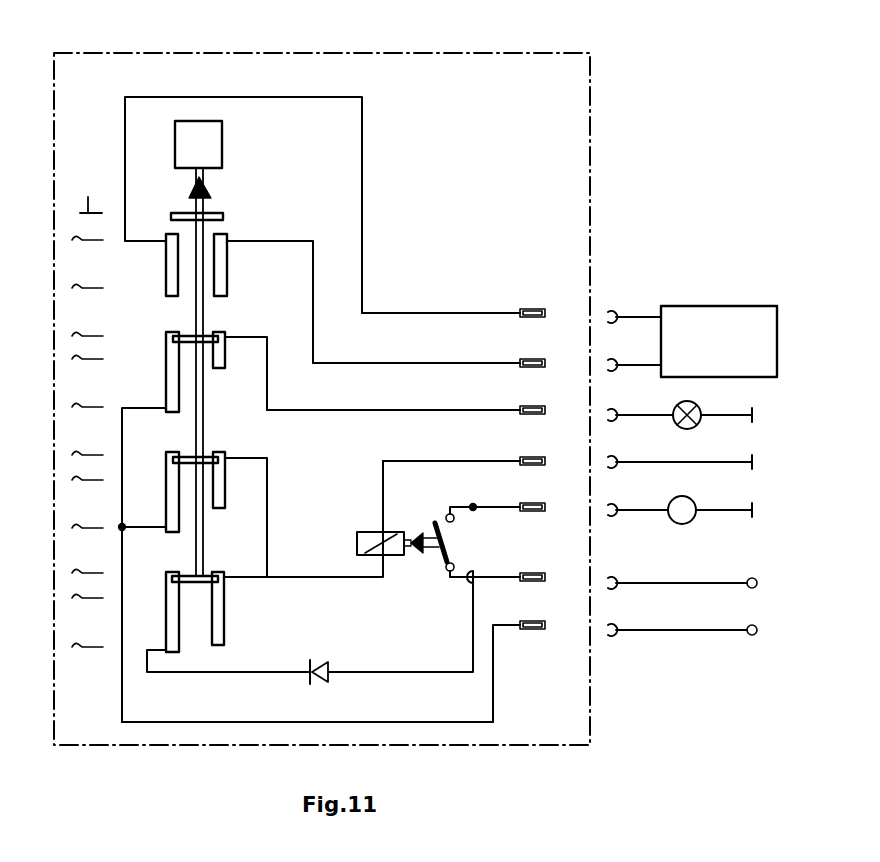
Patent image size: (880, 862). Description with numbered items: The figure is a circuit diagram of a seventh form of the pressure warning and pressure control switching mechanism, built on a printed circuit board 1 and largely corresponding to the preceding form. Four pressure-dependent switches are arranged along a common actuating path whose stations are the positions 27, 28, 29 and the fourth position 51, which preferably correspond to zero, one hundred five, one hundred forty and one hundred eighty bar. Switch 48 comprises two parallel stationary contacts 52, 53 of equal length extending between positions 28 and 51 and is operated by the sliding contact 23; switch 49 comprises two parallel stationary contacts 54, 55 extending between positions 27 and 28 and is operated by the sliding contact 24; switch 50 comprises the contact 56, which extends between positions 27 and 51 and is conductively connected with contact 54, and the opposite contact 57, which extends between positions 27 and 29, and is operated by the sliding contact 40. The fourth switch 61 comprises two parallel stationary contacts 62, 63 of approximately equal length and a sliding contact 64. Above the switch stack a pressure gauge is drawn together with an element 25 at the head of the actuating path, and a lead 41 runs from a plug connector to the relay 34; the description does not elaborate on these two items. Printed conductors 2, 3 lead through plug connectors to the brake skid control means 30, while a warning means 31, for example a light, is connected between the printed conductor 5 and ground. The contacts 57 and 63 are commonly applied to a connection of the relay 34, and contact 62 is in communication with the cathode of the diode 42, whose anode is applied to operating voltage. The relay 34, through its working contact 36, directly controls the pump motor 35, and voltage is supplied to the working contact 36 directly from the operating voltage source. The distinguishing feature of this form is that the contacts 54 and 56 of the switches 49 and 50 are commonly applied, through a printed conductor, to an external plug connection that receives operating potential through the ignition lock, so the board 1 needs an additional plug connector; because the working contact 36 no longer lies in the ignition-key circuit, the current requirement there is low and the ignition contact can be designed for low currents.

The printed circuit board 1 is at (425, 88).
The printed conductor 2 is at (420, 313).
The printed conductor 3 is at (415, 363).
The printed conductor 5 is at (397, 410).
The sliding contact 23 is at (213, 215).
The sliding contact 24 is at (184, 334).
The check valve 25 is at (194, 180).
The position 27 is at (77, 376).
The position 28 is at (77, 416).
The position 29 is at (272, 128).
The brake skid control means 30 is at (698, 312).
The warning means 31 is at (676, 421).
The relay 34 is at (362, 531).
The pump motor 35 is at (672, 517).
The working contact 36 is at (441, 553).
The sliding contact 40 is at (208, 456).
The lead to relay 41 is at (442, 461).
The diode 42 is at (326, 662).
The switch 48 is at (227, 235).
The switch 49 is at (216, 352).
The switch 50 is at (235, 480).
The fourth position 51 is at (77, 466).
The stationary contact 52 is at (166, 270).
The stationary contact 53 is at (227, 270).
The stationary contact 54 is at (166, 357).
The stationary contact 55 is at (225, 355).
The contact 56 is at (166, 490).
The contact 57 is at (225, 497).
The fourth switch 61 is at (222, 612).
The stationary contact 62 is at (166, 597).
The stationary contact 63 is at (224, 607).
The sliding contact 64 is at (162, 722).